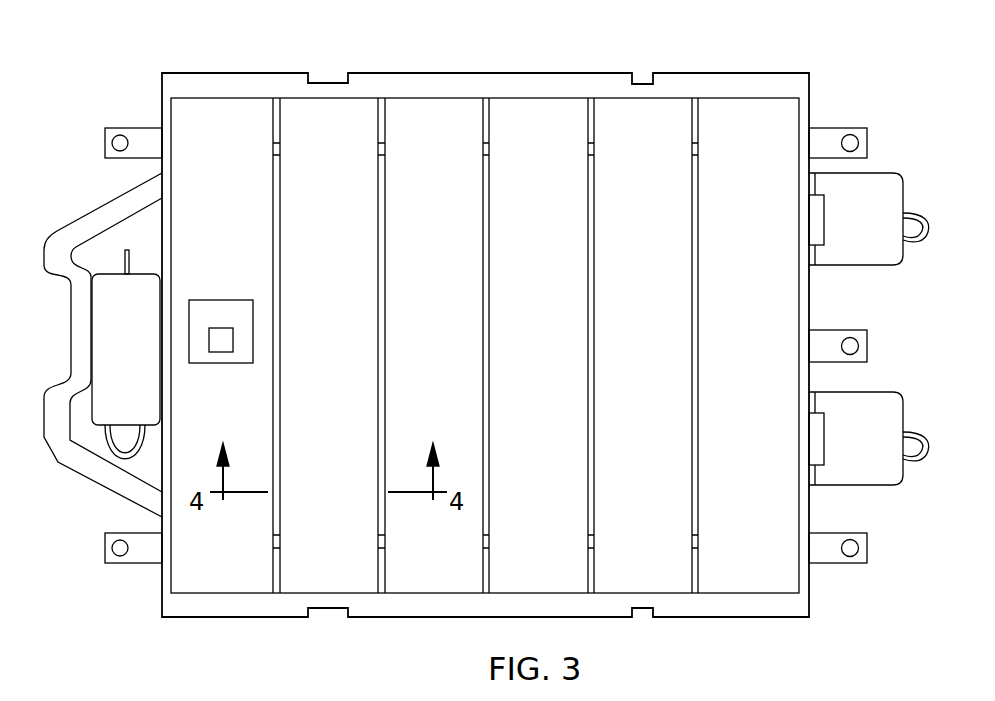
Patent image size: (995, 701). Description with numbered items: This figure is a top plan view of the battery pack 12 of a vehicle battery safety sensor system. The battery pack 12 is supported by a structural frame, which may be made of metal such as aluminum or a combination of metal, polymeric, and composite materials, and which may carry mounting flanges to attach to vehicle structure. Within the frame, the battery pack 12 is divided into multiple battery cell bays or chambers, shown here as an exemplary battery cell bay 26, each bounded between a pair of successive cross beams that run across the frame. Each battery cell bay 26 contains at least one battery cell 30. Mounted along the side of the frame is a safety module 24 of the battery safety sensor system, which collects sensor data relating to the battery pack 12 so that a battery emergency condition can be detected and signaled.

The battery pack 12 is at (852, 68).
The safety module 24 is at (880, 413).
The battery cell bay 26 is at (318, 133).
The battery cell 30 is at (195, 300).